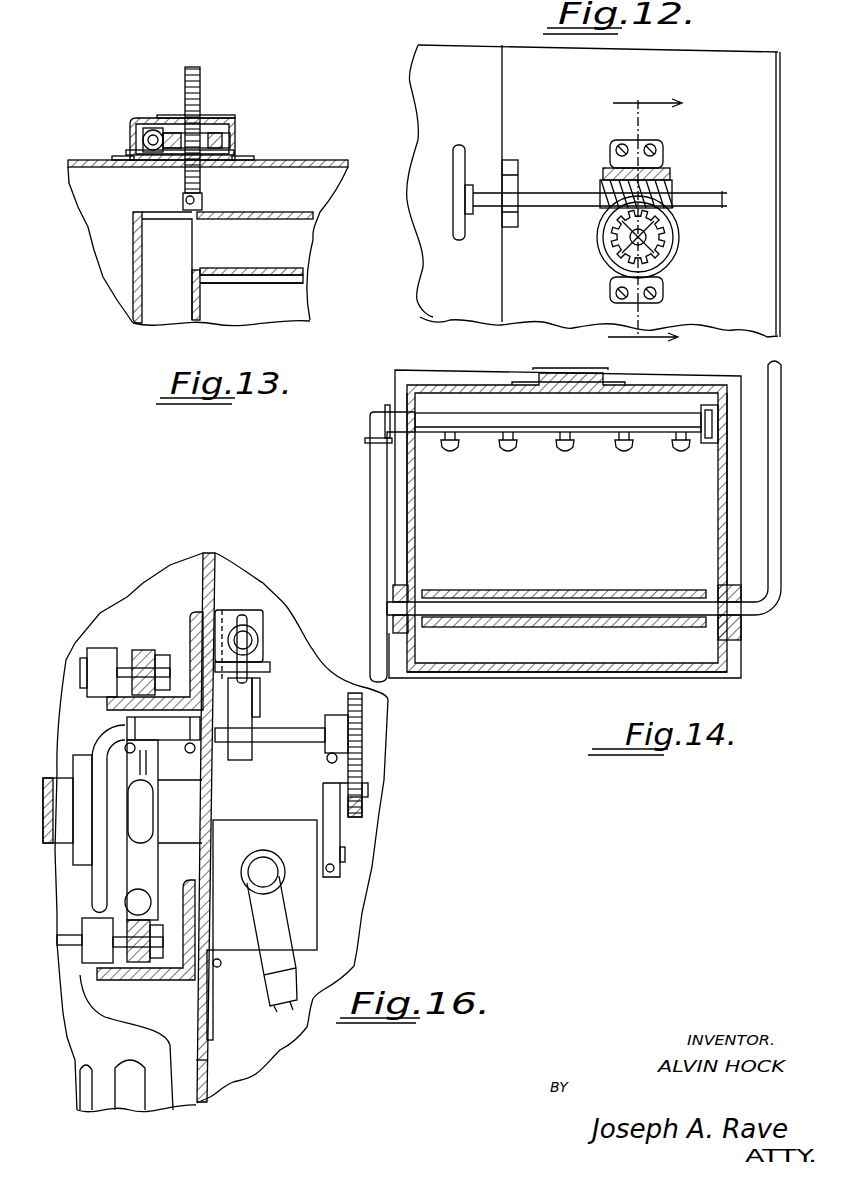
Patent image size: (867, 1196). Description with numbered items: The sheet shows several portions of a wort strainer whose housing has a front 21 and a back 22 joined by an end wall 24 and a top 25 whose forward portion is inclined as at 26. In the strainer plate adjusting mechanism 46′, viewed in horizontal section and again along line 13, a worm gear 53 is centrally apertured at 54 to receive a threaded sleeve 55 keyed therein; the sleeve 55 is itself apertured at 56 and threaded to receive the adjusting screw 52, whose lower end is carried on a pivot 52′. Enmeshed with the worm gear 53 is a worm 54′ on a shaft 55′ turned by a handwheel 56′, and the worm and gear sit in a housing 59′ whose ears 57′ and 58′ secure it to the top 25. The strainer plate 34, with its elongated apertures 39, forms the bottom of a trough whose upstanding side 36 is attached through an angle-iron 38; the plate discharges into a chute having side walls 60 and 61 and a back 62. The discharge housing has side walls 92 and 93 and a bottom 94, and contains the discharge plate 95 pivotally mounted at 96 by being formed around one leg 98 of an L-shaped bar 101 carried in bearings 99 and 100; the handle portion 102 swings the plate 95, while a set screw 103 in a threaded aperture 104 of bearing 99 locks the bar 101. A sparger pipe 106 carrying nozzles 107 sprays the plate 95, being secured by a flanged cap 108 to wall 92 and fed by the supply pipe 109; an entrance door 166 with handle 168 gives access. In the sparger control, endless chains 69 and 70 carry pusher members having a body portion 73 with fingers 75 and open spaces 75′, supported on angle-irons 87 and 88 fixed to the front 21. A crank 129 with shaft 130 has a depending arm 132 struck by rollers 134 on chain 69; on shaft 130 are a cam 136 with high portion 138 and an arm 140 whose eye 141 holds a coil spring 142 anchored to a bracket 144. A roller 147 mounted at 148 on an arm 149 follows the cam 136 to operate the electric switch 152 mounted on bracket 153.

In FIG. 12, the back 22 is at (780, 178).
In FIG. 13, the back 22 is at (320, 200).
In FIG. 12, the end wall 24 is at (728, 52).
In FIG. 12, the top 25 is at (762, 84).
In FIG. 13, the top 25 is at (330, 160).
In FIG. 12, the inclined forward portion of the top 26 is at (480, 60).
In FIG. 12, the section line 13— 13 is at (645, 220).
In FIG. 12, the adjusting mechanism 46′ is at (591, 140).
In FIG. 13, the adjusting mechanism 46′ is at (128, 82).
In FIG. 13, the adjusting screw 52 is at (200, 80).
In FIG. 13, the pivot 52′ is at (213, 198).
In FIG. 12, the worm gear 53 is at (678, 256).
In FIG. 13, the worm gear 53 is at (232, 140).
In FIG. 12, the central aperture 54 is at (676, 231).
In FIG. 12, the worm 54′ is at (670, 180).
In FIG. 13, the worm 54′ is at (145, 130).
In FIG. 13, the threaded sleeve 55 is at (165, 122).
In FIG. 12, the worm shaft 55′ is at (592, 183).
In FIG. 13, the worm shaft 55′ is at (135, 167).
In FIG. 12, the threaded aperture of sleeve 56 is at (600, 242).
In FIG. 12, the handwheel 56′ is at (458, 242).
In FIG. 12, the ear 57′ is at (662, 158).
In FIG. 13, the ear 57′ is at (118, 158).
In FIG. 12, the ear 58′ is at (666, 292).
In FIG. 13, the ear 58′ is at (252, 158).
In FIG. 12, the housing 59′ is at (684, 244).
In FIG. 13, the housing 59′ is at (230, 116).
In FIG. 13, the strainer plate 34 is at (240, 268).
In FIG. 13, the upstanding side 36 is at (305, 240).
In FIG. 13, the angle-iron 38 is at (305, 290).
In FIG. 13, the elongated aperture 39 is at (296, 280).
In FIG. 13, the side wall of chute 60 is at (202, 298).
In FIG. 13, the side wall of chute 61 is at (133, 295).
In FIG. 13, the back of chute 62 is at (167, 307).
In FIG. 14, the side wall of discharge housing 92 is at (718, 536).
In FIG. 14, the side wall of discharge housing 93 is at (415, 516).
In FIG. 14, the bottom 94 is at (580, 680).
In FIG. 14, the discharge plate 95 is at (538, 590).
In FIG. 14, the pivotal mounting 96 is at (442, 628).
In FIG. 14, the leg of L-shaped bar 98 is at (480, 616).
In FIG. 14, the bearing 99 is at (745, 632).
In FIG. 14, the bearing 100 is at (410, 588).
In FIG. 14, the L-shaped bar 101 is at (782, 608).
In FIG. 14, the handle portion 102 is at (786, 490).
In FIG. 14, the set screw 103 is at (742, 656).
In FIG. 14, the threaded aperture 104 is at (712, 636).
In FIG. 14, the sparger pipe 106 is at (536, 440).
In FIG. 14, the sparger head or nozzle 107 is at (572, 456).
In FIG. 14, the flanged cap 108 is at (703, 442).
In FIG. 14, the sparging fluid supply pipe 109 is at (370, 492).
In FIG. 14, the entrance door 166 is at (690, 385).
In FIG. 14, the handle 168 is at (566, 367).
In FIG. 16, the front 21 is at (207, 1065).
In FIG. 16, the endless chain 69 is at (157, 648).
In FIG. 16, the endless chain 70 is at (152, 878).
In FIG. 16, the body portion 73 is at (72, 1023).
In FIG. 16, the finger 75 is at (105, 1112).
In FIG. 16, the open space portion 75′ is at (140, 1115).
In FIG. 16, the supporting angle-iron 87 is at (193, 615).
In FIG. 16, the supporting angle-iron 88 is at (188, 985).
In FIG. 16, the crank 129 is at (110, 743).
In FIG. 16, the shaft 130 is at (283, 742).
In FIG. 16, the arm 132 is at (95, 860).
In FIG. 16, the roller 134 is at (122, 630).
In FIG. 16, the cam shaped roller 136 is at (335, 715).
In FIG. 16, the peripheral high portion 138 is at (362, 715).
In FIG. 16, the arm 140 is at (252, 700).
In FIG. 16, the eye 141 is at (262, 622).
In FIG. 16, the coil spring 142 is at (270, 667).
In FIG. 16, the bracket 144 is at (252, 612).
In FIG. 16, the roller 147 is at (362, 812).
In FIG. 16, the roller mounting 148 is at (368, 790).
In FIG. 16, the arm 149 is at (335, 880).
In FIG. 16, the electric switch 152 is at (288, 820).
In FIG. 16, the bracket 153 is at (237, 950).